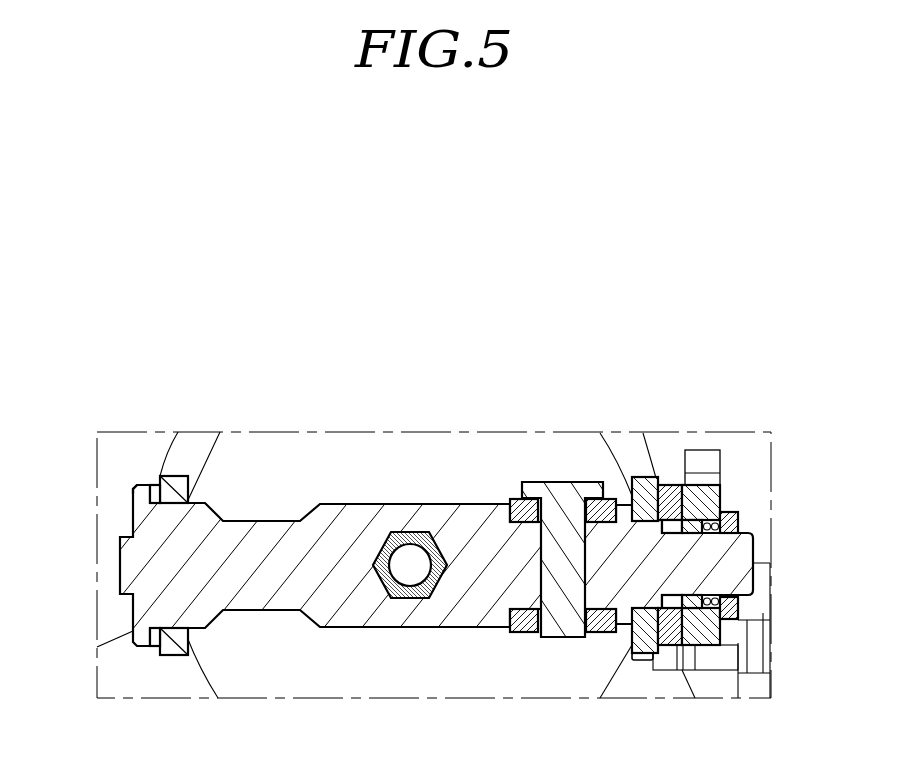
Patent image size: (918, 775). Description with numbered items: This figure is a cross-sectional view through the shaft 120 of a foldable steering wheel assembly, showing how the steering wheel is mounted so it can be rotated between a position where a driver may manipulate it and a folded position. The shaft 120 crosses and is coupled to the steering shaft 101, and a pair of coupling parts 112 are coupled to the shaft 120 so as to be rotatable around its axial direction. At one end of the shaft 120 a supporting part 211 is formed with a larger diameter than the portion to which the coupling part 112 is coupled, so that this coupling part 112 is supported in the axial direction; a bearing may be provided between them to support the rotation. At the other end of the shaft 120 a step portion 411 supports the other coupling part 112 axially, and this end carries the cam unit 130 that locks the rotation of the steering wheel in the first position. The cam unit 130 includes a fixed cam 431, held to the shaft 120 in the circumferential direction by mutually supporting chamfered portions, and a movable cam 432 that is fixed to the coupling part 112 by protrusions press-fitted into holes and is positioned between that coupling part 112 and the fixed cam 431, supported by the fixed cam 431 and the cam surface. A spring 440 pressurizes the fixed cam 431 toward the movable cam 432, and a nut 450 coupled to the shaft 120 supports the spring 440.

The steering shaft 101 is at (410, 538).
The coupling part 112 is at (168, 477).
The shaft 120 is at (342, 529).
The cam unit 130 is at (683, 429).
The supporting part 211 is at (143, 498).
The step portion 411 is at (632, 654).
The fixed cam 431 is at (700, 490).
The movable cam 432 is at (673, 528).
The spring 440 is at (740, 600).
The nut 450 is at (740, 521).